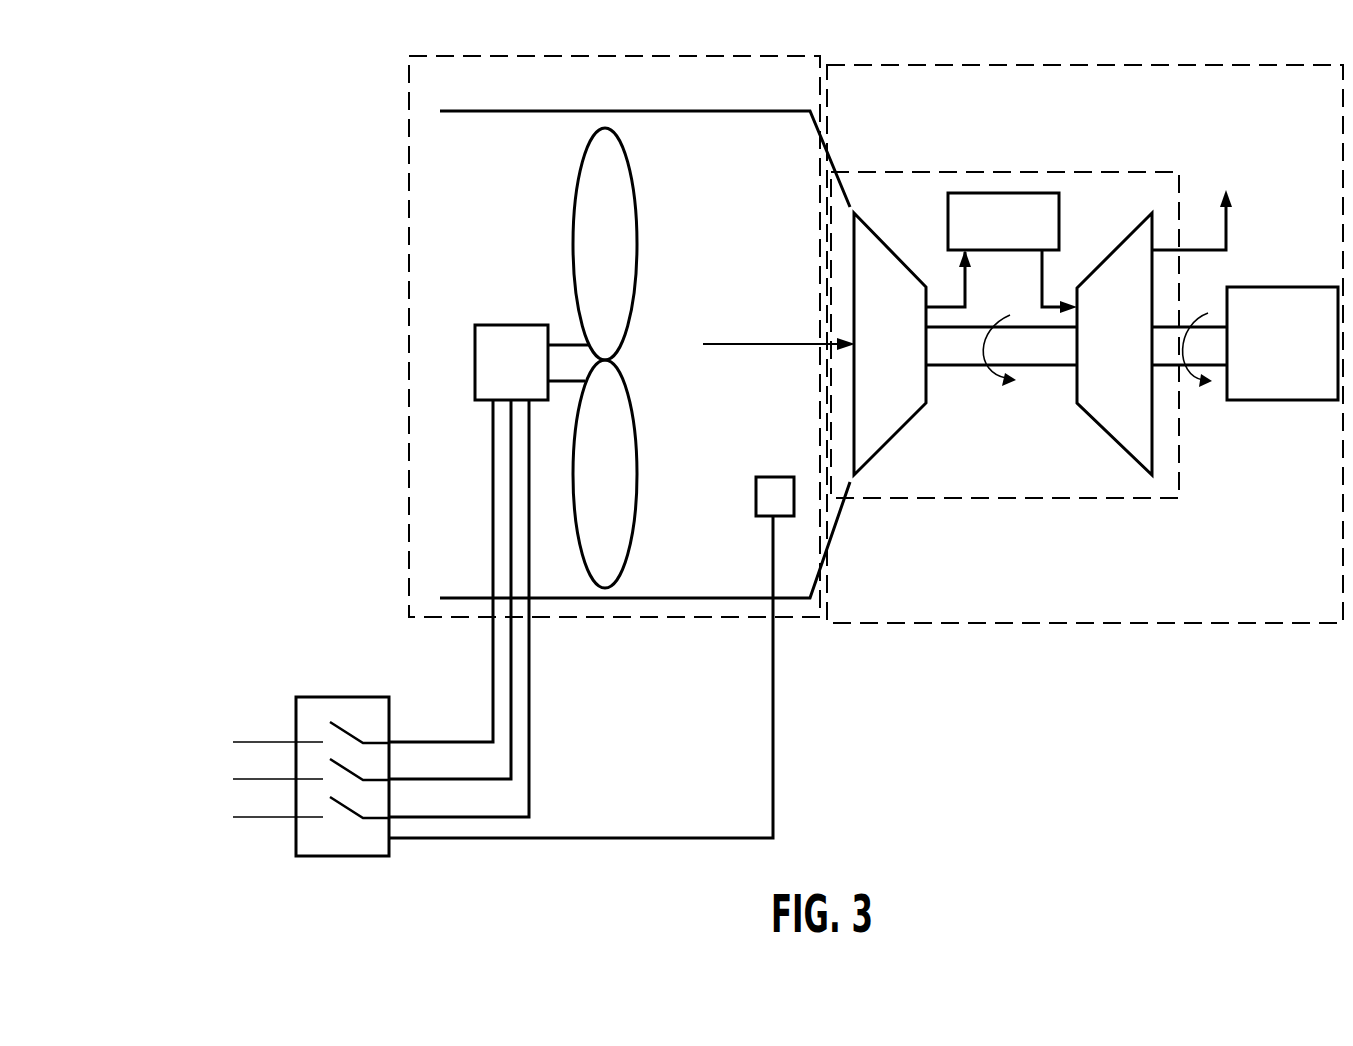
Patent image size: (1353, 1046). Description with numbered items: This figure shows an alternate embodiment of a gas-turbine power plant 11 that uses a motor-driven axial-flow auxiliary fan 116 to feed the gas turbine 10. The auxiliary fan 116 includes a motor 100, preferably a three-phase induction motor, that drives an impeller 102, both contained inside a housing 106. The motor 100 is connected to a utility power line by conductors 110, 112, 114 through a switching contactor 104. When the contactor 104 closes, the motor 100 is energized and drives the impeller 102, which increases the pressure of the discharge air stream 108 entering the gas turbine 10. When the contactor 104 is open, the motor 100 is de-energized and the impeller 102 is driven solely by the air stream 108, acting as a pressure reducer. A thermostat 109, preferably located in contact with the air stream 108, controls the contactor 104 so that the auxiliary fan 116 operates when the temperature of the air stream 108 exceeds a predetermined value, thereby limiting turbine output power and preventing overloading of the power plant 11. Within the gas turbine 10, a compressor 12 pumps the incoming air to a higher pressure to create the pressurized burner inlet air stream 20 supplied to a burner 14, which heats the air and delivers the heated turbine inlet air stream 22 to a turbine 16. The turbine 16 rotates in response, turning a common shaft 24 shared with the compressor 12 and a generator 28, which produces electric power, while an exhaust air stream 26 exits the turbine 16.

The gas turbine 10 is at (1105, 172).
The gas-turbine power plant 11 is at (1107, 625).
The compressor 12 is at (888, 425).
The burner 14 is at (1003, 193).
The turbine 16 is at (1103, 415).
The burner inlet air stream 20 is at (942, 300).
The turbine inlet air stream 22 is at (1046, 302).
The shaft 24 is at (963, 355).
The exhaust air stream 26 is at (1228, 225).
The generator 28 is at (1292, 362).
The motor 100 is at (475, 345).
The impeller 102 is at (585, 257).
The switching contactor 104 is at (365, 856).
The housing 106 is at (703, 110).
The discharge air stream 108 is at (770, 344).
The thermostat 109 is at (758, 507).
The conductor 110 is at (532, 662).
The conductor 112 is at (528, 742).
The conductor 114 is at (492, 692).
The auxiliary fan 116 is at (408, 283).